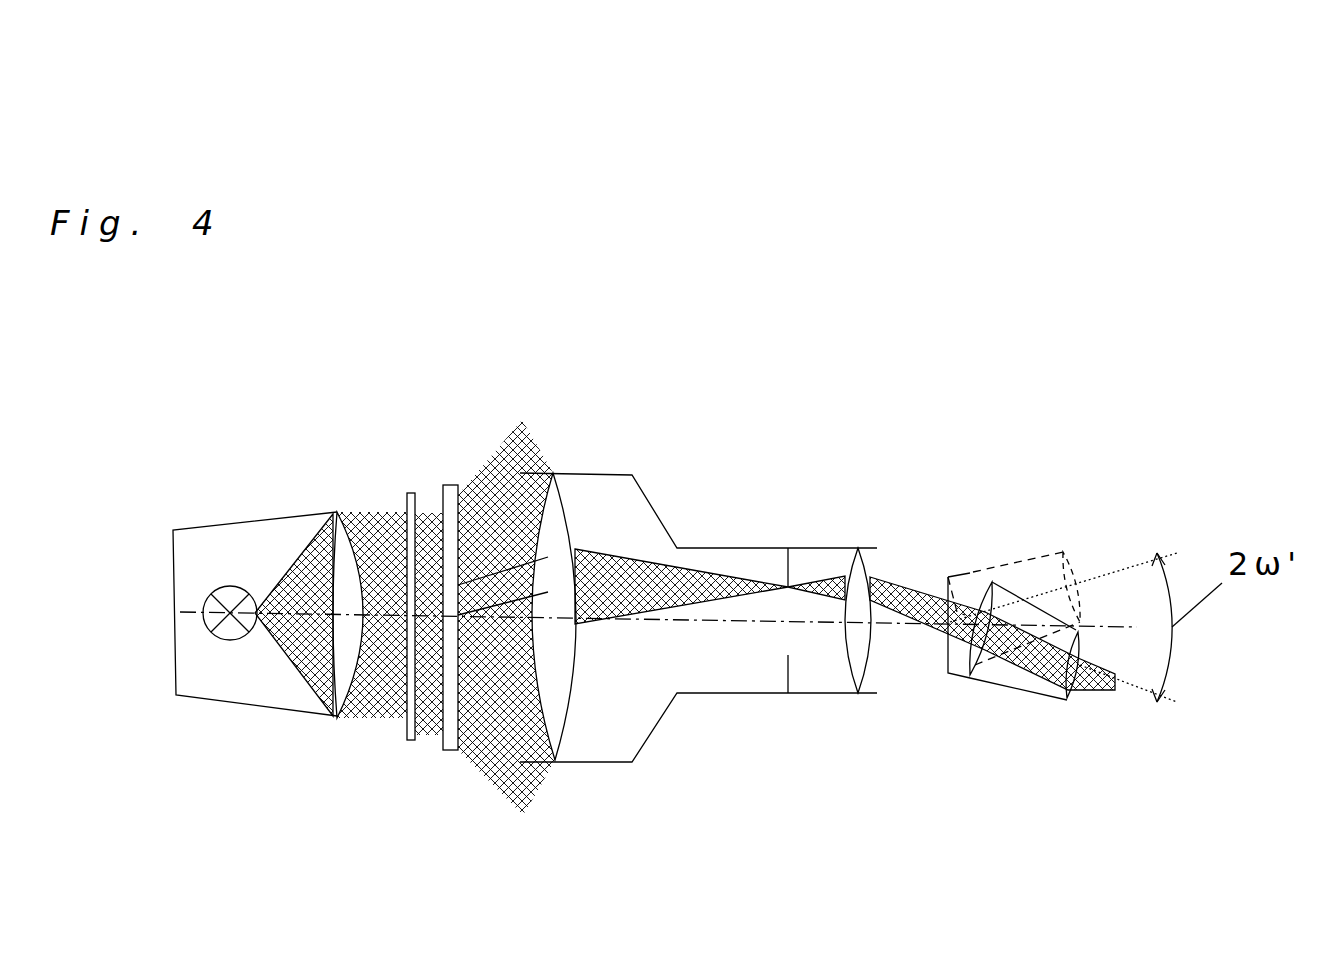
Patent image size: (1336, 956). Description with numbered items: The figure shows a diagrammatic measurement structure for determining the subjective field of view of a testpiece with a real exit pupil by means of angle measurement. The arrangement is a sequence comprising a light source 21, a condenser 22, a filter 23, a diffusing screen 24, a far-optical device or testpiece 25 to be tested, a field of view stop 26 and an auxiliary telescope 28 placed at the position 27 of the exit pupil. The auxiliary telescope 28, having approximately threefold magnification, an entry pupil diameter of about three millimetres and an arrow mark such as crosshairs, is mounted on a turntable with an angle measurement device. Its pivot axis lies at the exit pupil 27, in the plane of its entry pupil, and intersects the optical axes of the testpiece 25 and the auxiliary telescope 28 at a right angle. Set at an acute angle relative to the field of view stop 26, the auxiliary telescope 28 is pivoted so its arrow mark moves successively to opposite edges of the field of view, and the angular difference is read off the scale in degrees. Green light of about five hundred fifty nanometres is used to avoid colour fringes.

The light source 21 is at (230, 585).
The condenser 22 is at (338, 512).
The filter 23 is at (411, 493).
The diffusing screen 24 is at (452, 485).
The far-optical device (testpiece) 25 is at (735, 548).
The field of view stop 26 is at (788, 548).
The exit pupil 27 is at (957, 577).
The auxiliary telescope 28 is at (1027, 603).